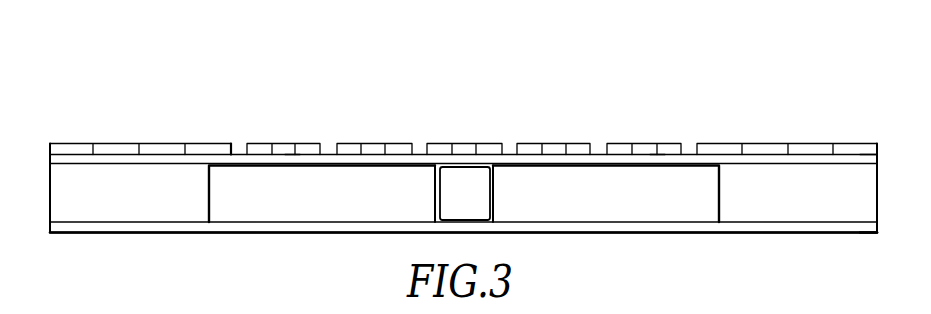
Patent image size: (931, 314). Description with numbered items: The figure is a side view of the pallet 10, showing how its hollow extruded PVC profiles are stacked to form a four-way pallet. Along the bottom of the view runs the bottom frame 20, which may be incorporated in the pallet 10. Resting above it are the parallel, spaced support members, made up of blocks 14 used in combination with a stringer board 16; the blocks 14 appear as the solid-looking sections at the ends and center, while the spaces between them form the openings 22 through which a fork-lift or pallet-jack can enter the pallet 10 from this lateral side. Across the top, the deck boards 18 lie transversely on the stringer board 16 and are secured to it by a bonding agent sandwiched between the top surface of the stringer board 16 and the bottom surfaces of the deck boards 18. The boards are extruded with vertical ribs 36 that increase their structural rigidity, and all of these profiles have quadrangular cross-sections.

The pallet 10 is at (53, 112).
The blocks 14 is at (493, 186).
The stringer boards 16 is at (878, 158).
The deck boards 18 is at (209, 143).
The bottom frame 20 is at (878, 227).
The openings 22 is at (604, 205).
The vertical ribs 36 is at (293, 148).